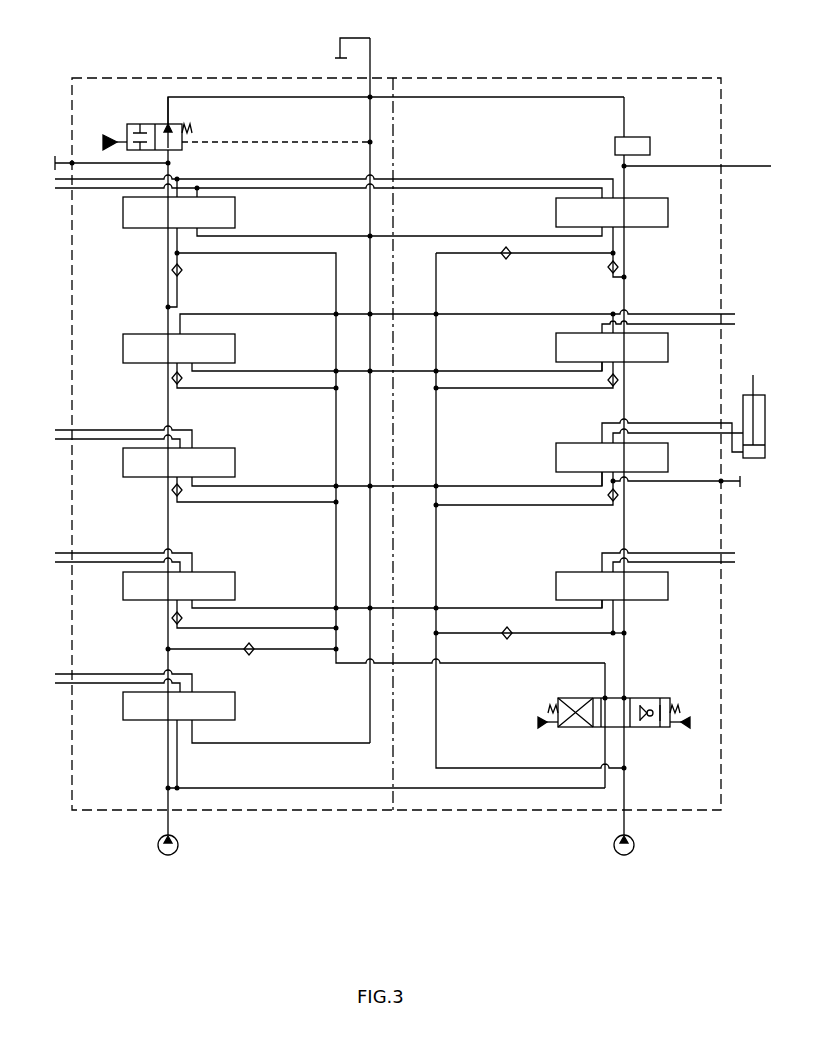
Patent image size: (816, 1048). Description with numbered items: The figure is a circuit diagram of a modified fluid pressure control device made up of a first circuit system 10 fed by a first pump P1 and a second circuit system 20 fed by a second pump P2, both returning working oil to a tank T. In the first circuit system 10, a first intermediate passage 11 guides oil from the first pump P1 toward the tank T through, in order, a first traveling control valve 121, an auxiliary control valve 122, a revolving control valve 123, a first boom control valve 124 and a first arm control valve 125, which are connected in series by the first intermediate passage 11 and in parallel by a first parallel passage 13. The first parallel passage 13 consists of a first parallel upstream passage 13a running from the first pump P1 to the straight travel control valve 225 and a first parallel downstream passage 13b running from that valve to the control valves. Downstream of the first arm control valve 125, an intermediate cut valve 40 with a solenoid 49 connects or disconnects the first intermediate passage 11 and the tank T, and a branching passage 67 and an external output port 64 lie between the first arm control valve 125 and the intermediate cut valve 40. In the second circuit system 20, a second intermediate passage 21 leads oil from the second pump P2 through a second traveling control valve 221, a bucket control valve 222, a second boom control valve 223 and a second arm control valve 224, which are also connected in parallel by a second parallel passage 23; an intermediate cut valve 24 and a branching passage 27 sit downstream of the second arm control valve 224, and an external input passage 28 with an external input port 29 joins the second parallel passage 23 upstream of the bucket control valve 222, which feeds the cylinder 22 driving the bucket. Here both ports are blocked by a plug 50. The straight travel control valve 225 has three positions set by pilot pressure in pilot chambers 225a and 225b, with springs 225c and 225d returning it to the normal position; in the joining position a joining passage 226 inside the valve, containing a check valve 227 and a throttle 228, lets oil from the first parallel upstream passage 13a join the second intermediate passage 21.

The first circuit system 10 is at (217, 78).
The second circuit system 20 is at (560, 78).
The first intermediate passage 11 is at (168, 277).
The first parallel passage 13 is at (386, 577).
The first parallel upstream passage 13a is at (350, 664).
The first parallel downstream passage 13b is at (320, 788).
The second intermediate passage 21 is at (624, 259).
The cylinder 22 is at (765, 412).
The second parallel passage 23 is at (436, 752).
The intermediate cut valve 24 is at (650, 143).
The branching passage 27 is at (730, 165).
The external input passage 28 is at (662, 486).
The external input port 29 is at (722, 484).
The intermediate cut valve 40 is at (130, 123).
The solenoid 49 is at (110, 136).
The plug 50 is at (56, 180).
The external output port 64 is at (72, 162).
The branching passage 67 is at (102, 162).
The first traveling control valve 121 is at (235, 712).
The auxiliary control valve 122 is at (235, 588).
The revolving control valve 123 is at (235, 465).
The first boom control valve 124 is at (235, 352).
The first arm control valve 125 is at (235, 215).
The second traveling control valve 221 is at (668, 580).
The bucket control valve 222 is at (668, 450).
The second boom control valve 223 is at (668, 340).
The second arm control valve 224 is at (655, 198).
The straight travel control valve 225 is at (592, 715).
The pilot chamber 225a is at (545, 721).
The pilot chamber 225b is at (683, 730).
The spring 225c is at (553, 706).
The spring 225d is at (679, 712).
The joining passage 226 is at (641, 708).
The check valve 227 is at (655, 708).
The throttle 228 is at (657, 727).
The first pump P1 is at (178, 844).
The second pump P2 is at (634, 845).
The tank T is at (340, 52).